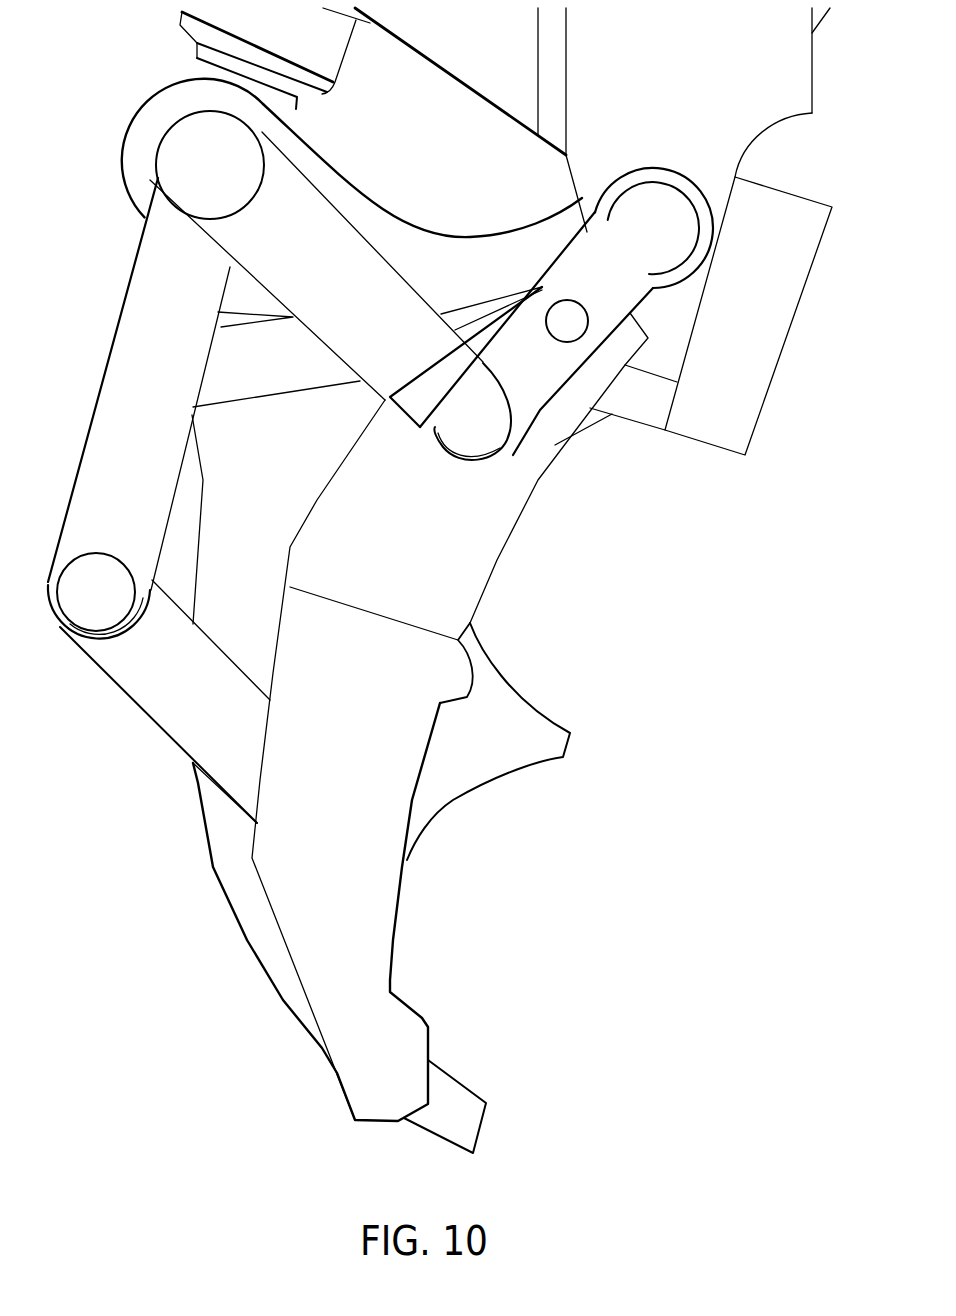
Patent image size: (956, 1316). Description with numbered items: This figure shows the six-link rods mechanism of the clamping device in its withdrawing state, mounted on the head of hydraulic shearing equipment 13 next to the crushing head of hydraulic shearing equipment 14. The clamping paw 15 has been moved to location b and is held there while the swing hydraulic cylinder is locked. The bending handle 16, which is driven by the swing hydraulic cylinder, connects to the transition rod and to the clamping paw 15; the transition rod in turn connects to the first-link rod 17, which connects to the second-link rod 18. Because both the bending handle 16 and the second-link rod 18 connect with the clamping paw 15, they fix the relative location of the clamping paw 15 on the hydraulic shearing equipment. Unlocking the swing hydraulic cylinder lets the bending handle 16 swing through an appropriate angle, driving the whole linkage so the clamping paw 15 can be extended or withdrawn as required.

The head of hydraulic shearing equipment 13 is at (752, 320).
The crushing head of hydraulic shearing equipment 14 is at (543, 733).
The clamping paw 15 is at (360, 925).
The bending handle 16 is at (540, 365).
The first-link rod 17 is at (148, 402).
The second-link rod 18 is at (227, 718).